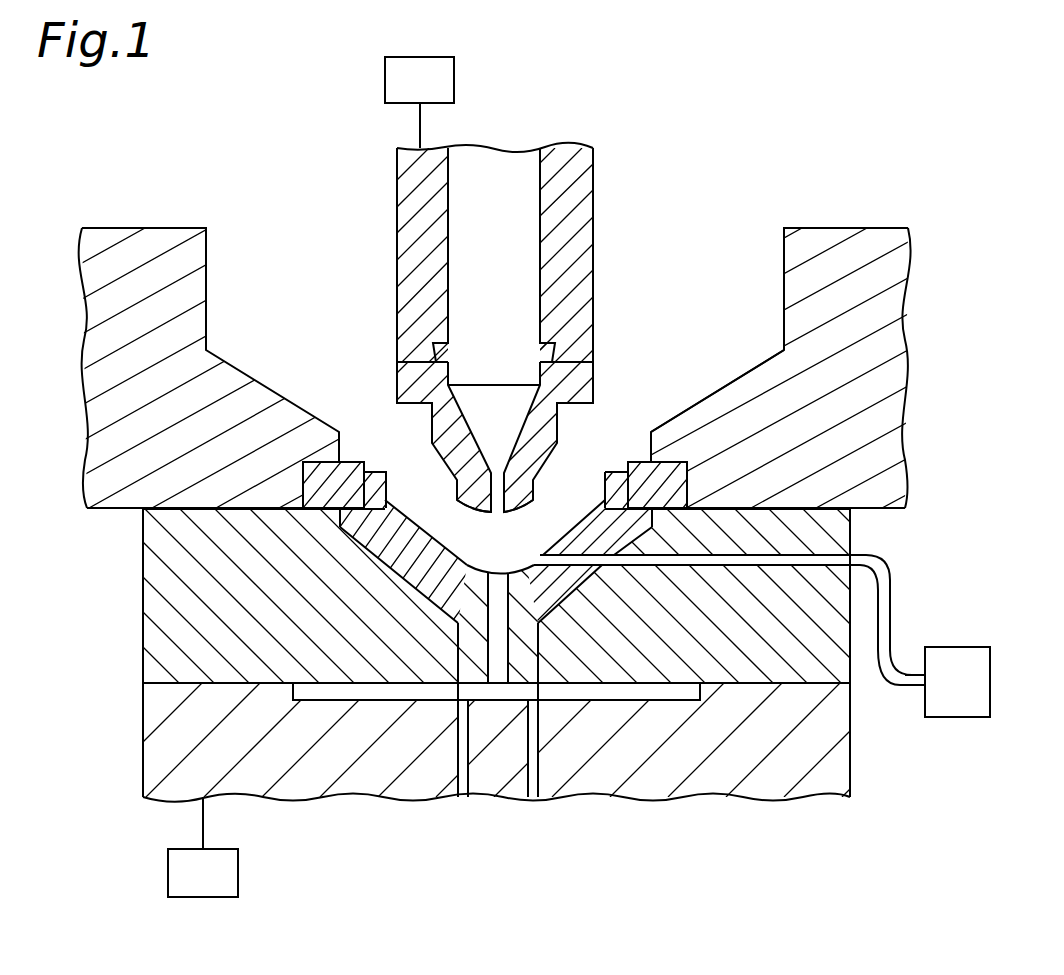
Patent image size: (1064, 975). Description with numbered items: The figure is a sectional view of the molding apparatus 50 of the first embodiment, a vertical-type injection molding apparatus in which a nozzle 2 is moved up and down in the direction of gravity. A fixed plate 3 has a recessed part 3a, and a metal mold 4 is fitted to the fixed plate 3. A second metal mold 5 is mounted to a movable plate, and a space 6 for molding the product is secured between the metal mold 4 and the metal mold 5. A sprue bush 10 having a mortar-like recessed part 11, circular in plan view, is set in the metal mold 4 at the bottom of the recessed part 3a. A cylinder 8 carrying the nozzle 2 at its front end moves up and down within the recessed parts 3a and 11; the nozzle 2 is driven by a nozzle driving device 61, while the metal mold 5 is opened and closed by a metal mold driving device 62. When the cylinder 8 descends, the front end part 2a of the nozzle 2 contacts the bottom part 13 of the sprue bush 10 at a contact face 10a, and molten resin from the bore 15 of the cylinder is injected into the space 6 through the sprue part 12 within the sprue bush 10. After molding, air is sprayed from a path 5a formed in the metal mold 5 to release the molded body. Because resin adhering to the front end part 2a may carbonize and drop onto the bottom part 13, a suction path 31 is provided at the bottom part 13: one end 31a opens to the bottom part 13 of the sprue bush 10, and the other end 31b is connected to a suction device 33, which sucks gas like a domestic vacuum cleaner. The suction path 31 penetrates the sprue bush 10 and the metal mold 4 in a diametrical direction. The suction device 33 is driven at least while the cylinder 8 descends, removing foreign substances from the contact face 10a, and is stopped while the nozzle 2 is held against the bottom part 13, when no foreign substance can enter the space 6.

The nozzle 2 is at (407, 380).
The front end part of the nozzle 2a is at (536, 502).
The fixed plate 3 is at (146, 248).
The recessed part of the fixed plate 3a is at (690, 277).
The metal mold 4 is at (177, 568).
The metal mold 5 is at (837, 757).
The path 5a is at (533, 800).
The space 6 is at (630, 692).
The cylinder 8 is at (407, 203).
The sprue bush 10 is at (376, 493).
The contact face 10a is at (467, 563).
The recessed part of the sprue bush 11 is at (557, 530).
The sprue part 12 is at (498, 660).
The bottom part of the sprue bush 13 is at (457, 620).
The nozzle bore 15 is at (516, 174).
The suction path 31 is at (816, 559).
The one end of the suction path 31a is at (543, 560).
The other end of the suction path 31b is at (919, 686).
The suction device 33 is at (990, 680).
The molding apparatus 50 is at (946, 595).
The nozzle driving device 61 is at (454, 77).
The metal mold driving device 62 is at (238, 872).